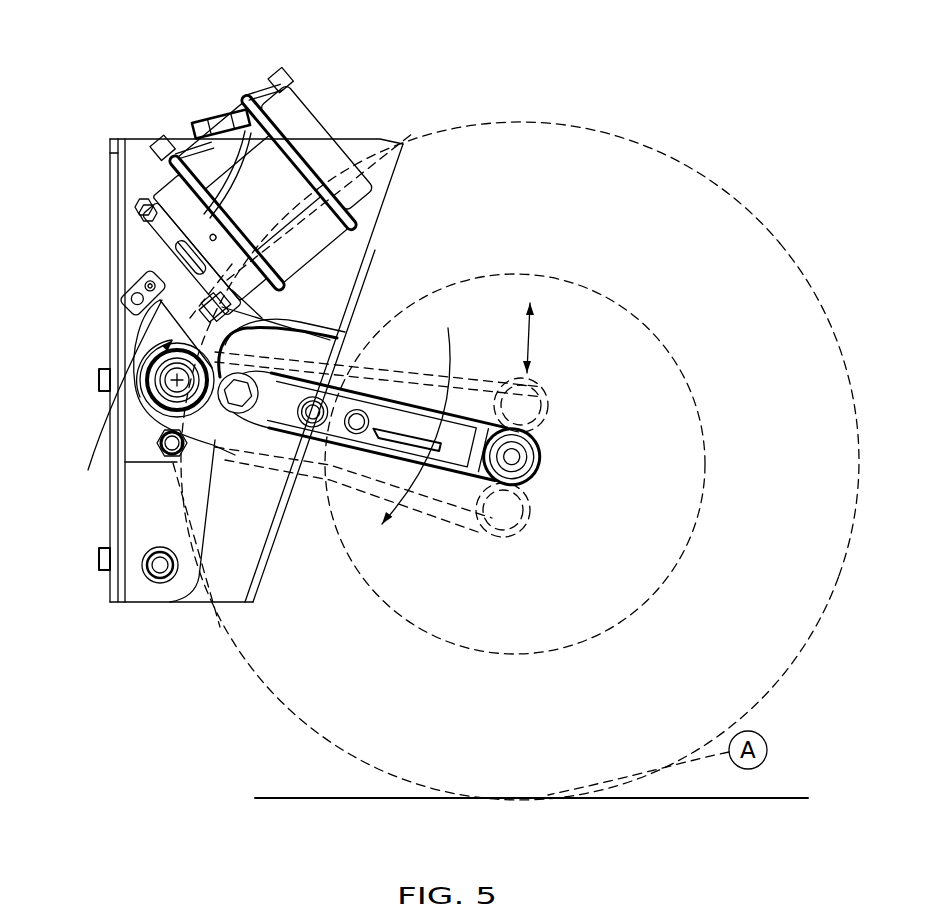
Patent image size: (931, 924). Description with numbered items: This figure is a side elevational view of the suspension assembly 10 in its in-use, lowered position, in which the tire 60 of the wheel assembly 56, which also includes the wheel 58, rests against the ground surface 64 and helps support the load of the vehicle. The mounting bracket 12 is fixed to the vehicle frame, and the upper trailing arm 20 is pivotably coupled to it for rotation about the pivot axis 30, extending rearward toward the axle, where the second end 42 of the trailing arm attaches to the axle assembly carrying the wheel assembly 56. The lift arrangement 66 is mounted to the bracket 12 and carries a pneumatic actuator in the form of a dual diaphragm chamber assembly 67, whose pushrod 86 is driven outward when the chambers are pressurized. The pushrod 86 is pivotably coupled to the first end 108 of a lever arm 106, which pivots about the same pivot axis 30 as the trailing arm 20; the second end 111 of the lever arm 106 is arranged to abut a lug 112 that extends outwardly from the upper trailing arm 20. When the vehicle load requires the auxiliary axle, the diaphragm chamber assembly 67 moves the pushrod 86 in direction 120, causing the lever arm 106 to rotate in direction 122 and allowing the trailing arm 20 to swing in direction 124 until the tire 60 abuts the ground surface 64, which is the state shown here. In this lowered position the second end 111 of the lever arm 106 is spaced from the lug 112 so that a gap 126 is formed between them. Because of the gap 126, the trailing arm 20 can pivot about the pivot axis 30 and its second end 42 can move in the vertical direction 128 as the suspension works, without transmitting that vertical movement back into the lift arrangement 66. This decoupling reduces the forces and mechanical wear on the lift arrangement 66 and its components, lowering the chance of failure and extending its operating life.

The suspension assembly 10 is at (110, 122).
The mounting bracket 12 is at (106, 528).
The upper trailing arm 20 is at (374, 398).
The pivot axis 30 is at (172, 383).
The second end 42 is at (482, 487).
The wheel assembly 56 is at (750, 205).
The wheel 58 is at (697, 400).
The tire 60 is at (818, 308).
The ground surface 64 is at (776, 833).
The lift arrangement 66 is at (104, 209).
The dual diaphragm chamber assembly 67 is at (330, 124).
The pushrod 86 is at (157, 257).
The lever arm 106 is at (112, 352).
The first end 108 is at (143, 323).
The second end 111 is at (215, 445).
The lug 112 is at (305, 333).
The direction 120 is at (136, 259).
The direction 122 is at (140, 392).
The direction 124 is at (450, 366).
The gap 126 is at (223, 422).
The vertical direction 128 is at (533, 318).